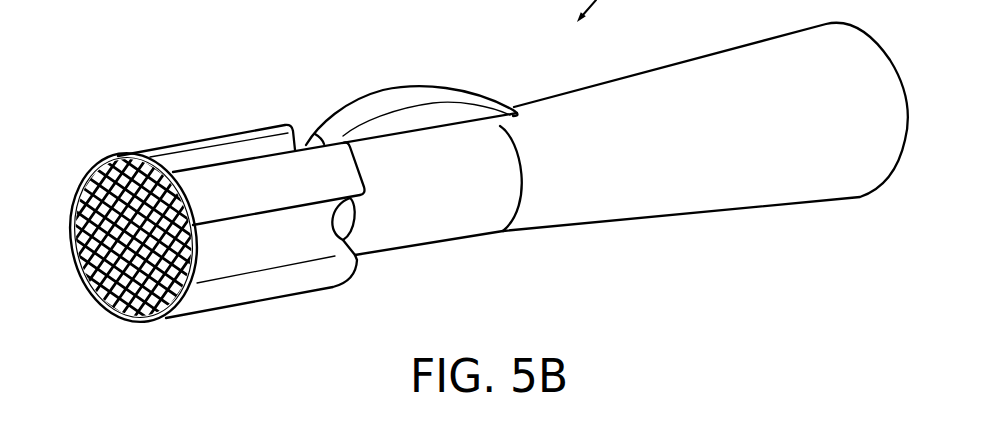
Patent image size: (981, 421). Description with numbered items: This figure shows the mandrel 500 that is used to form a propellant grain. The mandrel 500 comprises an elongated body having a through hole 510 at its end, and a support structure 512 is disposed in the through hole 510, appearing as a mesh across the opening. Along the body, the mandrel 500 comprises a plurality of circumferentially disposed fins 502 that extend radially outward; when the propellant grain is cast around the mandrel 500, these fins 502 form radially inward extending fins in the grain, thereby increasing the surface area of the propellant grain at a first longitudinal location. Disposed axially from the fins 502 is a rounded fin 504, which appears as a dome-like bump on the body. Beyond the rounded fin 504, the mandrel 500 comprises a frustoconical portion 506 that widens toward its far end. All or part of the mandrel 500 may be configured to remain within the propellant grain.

The mandrel 500 is at (255, 78).
The circumferentially disposed fins 502 is at (233, 185).
The rounded fin 504 is at (403, 115).
The frustoconical portion 506 is at (718, 77).
The through hole 510 is at (78, 203).
The support structure 512 is at (98, 285).